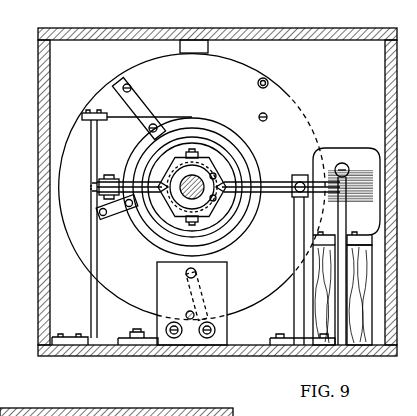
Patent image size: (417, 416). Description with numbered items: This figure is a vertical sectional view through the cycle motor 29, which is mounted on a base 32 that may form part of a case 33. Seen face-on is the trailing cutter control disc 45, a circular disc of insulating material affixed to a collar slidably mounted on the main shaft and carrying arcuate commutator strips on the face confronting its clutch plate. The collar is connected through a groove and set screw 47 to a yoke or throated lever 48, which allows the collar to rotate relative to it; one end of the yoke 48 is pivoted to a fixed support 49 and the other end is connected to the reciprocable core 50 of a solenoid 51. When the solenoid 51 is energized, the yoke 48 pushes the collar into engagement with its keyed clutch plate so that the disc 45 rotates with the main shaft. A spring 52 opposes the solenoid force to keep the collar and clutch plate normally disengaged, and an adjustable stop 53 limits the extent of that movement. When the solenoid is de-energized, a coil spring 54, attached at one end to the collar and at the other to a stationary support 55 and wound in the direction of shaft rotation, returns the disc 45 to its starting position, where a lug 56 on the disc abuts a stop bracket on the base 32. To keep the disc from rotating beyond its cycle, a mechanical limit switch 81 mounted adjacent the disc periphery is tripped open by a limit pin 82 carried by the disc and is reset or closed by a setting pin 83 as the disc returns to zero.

The cycle motor 29 is at (125, 26).
The base 32 is at (215, 380).
The case 33 is at (347, 28).
The trailing cutter control disc 45 is at (312, 122).
The set screw 47 is at (224, 130).
The yoke 48 is at (278, 179).
The fixed support 49 is at (106, 178).
The reciprocable core 50 is at (360, 204).
The solenoid 51 is at (345, 148).
The spring 52 is at (349, 168).
The stop 53 is at (297, 195).
The coil spring 54 is at (250, 140).
The stationary support 55 is at (95, 112).
The lug 56 is at (187, 311).
The limit switch 81 is at (227, 283).
The limit pin 82 is at (258, 82).
The setting pin 83 is at (198, 306).